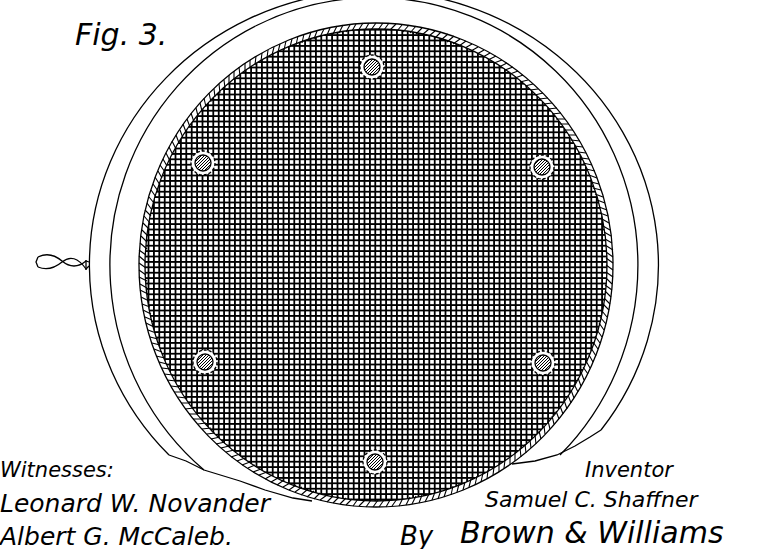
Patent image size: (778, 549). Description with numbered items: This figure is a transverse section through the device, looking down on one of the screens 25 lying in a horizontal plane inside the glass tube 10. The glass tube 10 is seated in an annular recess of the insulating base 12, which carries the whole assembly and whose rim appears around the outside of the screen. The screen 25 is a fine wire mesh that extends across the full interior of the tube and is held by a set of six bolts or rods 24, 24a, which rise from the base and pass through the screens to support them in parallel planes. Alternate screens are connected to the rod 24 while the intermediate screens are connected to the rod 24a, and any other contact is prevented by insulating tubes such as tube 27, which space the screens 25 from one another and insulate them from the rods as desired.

The glass tube 10 is at (150, 167).
The insulating base 12 is at (575, 83).
The bolt or rod 24 is at (552, 363).
The bolt or rod 24a is at (194, 366).
The screen 25 is at (587, 272).
The insulating tube 27 is at (152, 347).